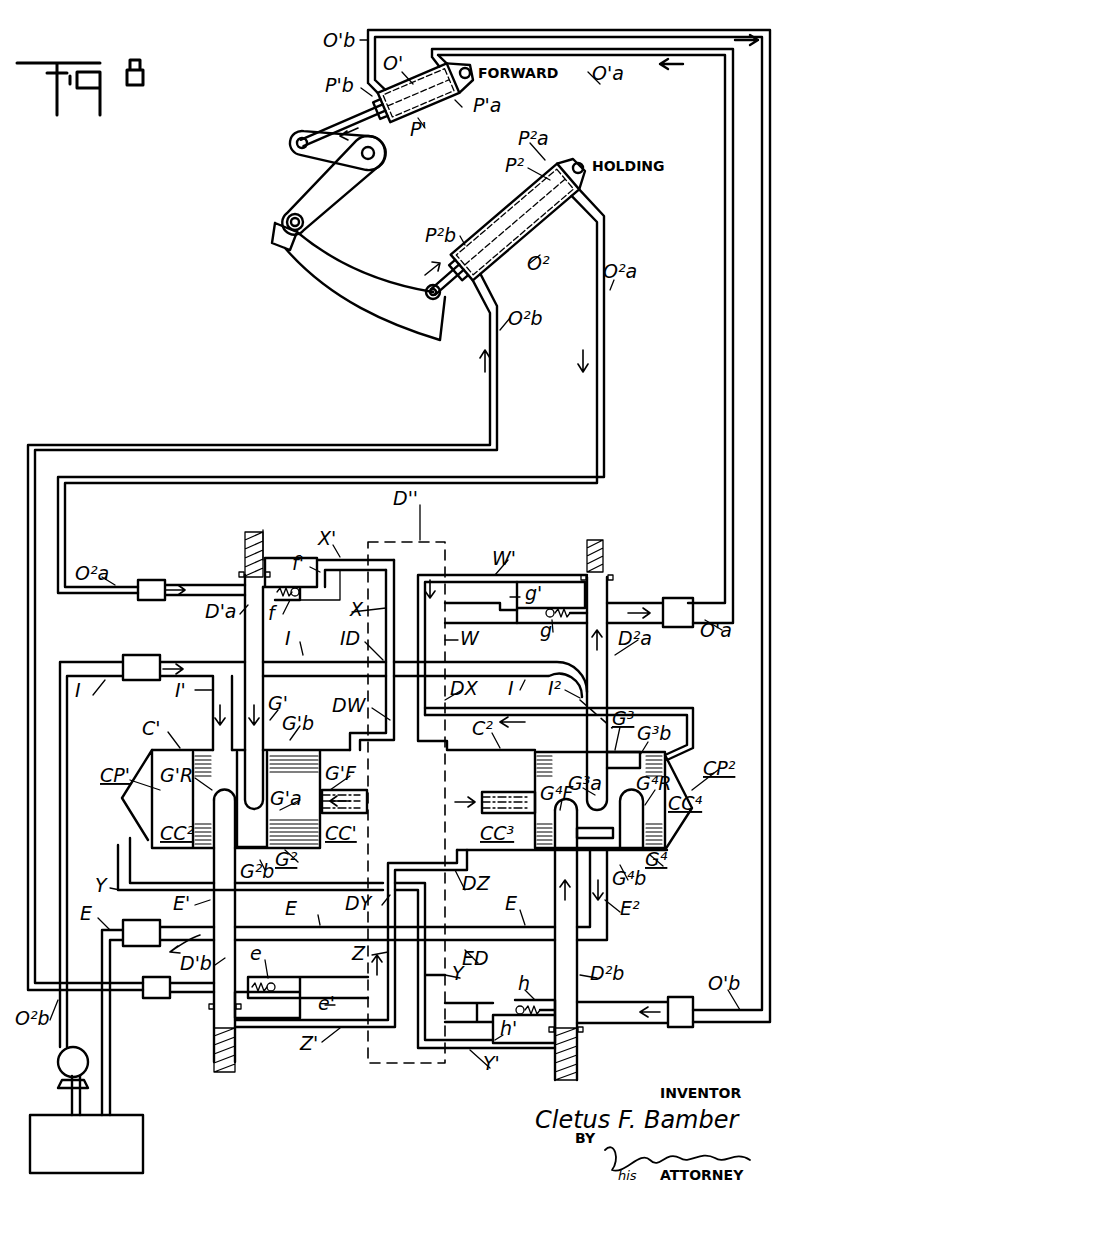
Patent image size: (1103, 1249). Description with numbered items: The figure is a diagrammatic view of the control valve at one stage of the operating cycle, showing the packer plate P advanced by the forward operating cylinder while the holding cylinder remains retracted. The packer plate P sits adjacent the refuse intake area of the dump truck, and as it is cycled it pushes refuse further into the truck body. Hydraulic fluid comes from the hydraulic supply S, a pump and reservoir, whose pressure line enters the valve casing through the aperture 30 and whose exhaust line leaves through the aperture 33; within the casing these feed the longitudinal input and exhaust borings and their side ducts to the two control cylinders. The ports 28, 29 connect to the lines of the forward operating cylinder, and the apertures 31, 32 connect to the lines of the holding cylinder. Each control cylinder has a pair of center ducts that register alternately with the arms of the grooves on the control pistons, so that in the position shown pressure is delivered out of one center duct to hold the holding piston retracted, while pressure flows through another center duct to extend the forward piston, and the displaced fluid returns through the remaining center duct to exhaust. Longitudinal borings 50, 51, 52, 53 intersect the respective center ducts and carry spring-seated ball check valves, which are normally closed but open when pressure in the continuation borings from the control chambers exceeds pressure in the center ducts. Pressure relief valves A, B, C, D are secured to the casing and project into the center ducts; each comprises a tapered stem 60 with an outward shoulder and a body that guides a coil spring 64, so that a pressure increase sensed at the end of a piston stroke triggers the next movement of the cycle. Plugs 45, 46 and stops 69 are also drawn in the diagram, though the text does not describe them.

The port 28 is at (673, 605).
The port 29 is at (668, 1018).
The aperture 30 is at (157, 658).
The aperture 31 is at (162, 584).
The aperture 32 is at (160, 1002).
The aperture 33 is at (160, 948).
The plug 45 is at (350, 795).
The plug 46 is at (494, 792).
The longitudinal boring 50 is at (340, 977).
The longitudinal boring 51 is at (352, 596).
The longitudinal boring 52 is at (470, 624).
The longitudinal boring 53 is at (455, 1013).
The tapered stem 60 is at (246, 566).
The coil spring 64 is at (278, 543).
The stop 69 is at (238, 572).
The packer plate P is at (355, 262).
The hydraulic supply S is at (86, 1110).
The pressure relief valve C is at (238, 533).
The pressure relief valve D is at (599, 538).
The pressure relief valve A is at (220, 1083).
The pressure relief valve B is at (582, 1086).